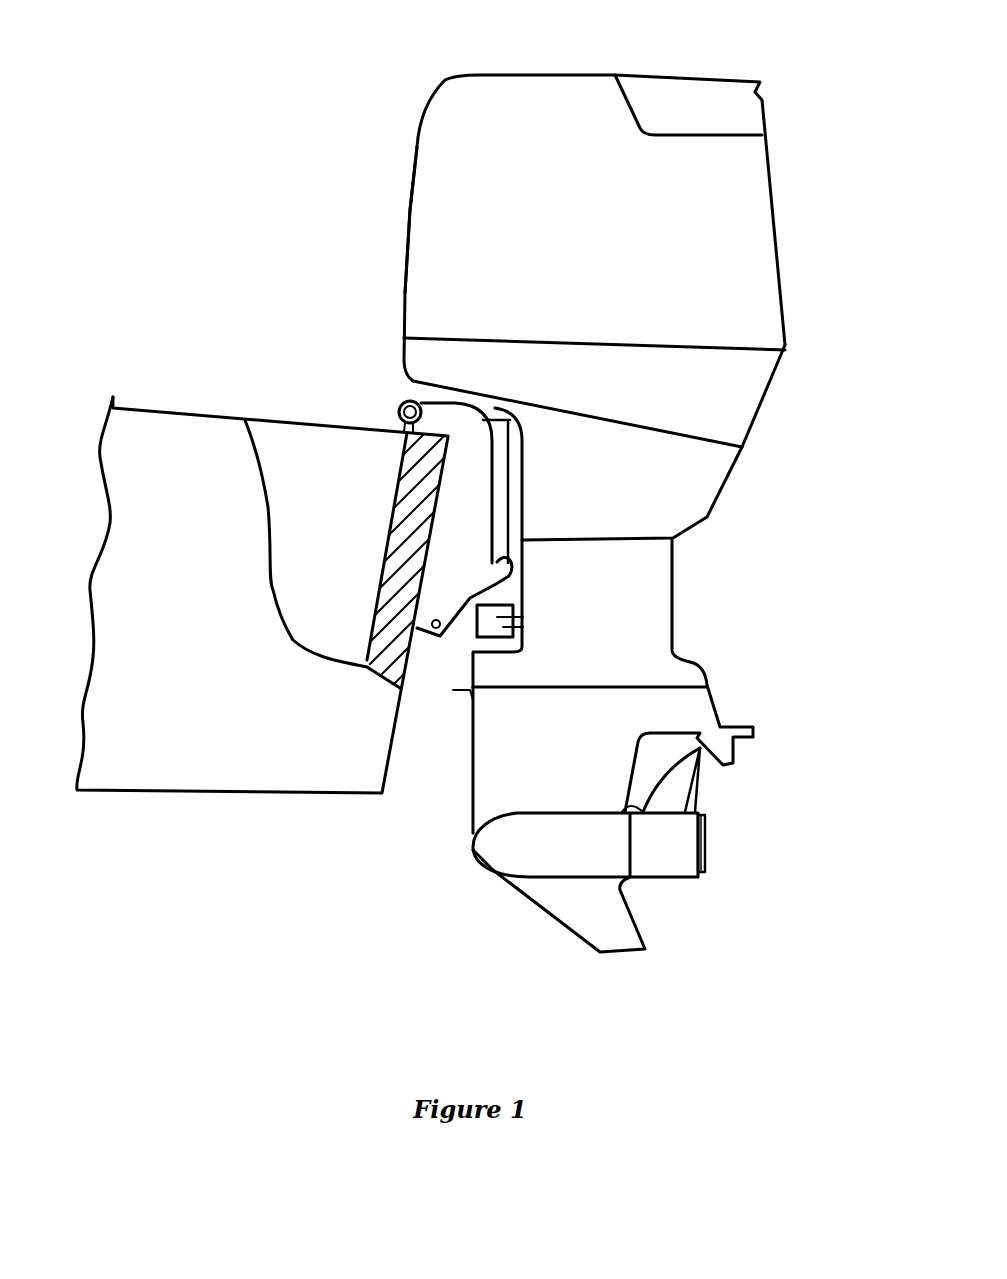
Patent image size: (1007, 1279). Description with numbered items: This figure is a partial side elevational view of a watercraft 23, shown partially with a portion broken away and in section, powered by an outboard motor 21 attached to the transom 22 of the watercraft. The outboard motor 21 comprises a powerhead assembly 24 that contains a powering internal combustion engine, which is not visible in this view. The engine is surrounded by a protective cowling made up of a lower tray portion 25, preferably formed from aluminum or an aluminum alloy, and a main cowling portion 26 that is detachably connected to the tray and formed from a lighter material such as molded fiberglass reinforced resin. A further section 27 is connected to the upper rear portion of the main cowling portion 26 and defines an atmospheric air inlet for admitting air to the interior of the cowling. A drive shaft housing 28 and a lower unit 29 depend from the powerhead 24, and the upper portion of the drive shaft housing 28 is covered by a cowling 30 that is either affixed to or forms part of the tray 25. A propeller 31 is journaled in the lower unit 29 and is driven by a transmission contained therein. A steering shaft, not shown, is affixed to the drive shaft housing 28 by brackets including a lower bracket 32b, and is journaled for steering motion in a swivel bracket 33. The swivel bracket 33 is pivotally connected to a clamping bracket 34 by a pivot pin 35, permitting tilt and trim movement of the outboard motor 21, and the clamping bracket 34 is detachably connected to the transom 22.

The outboard motor 21 is at (364, 110).
The transom 22 is at (410, 485).
The watercraft 23 is at (174, 800).
The powerhead assembly 24 is at (782, 174).
The lower tray portion 25 is at (417, 358).
The main cowling portion 26 is at (417, 240).
The further section 27 is at (672, 93).
The drive shaft housing 28 is at (660, 592).
The lower unit 29 is at (470, 792).
The cowling 30 is at (692, 488).
The propeller 31 is at (680, 777).
The lower bracket 32b is at (523, 617).
The swivel bracket 33 is at (493, 597).
The clamping bracket 34 is at (440, 555).
The pivot pin 35 is at (400, 405).